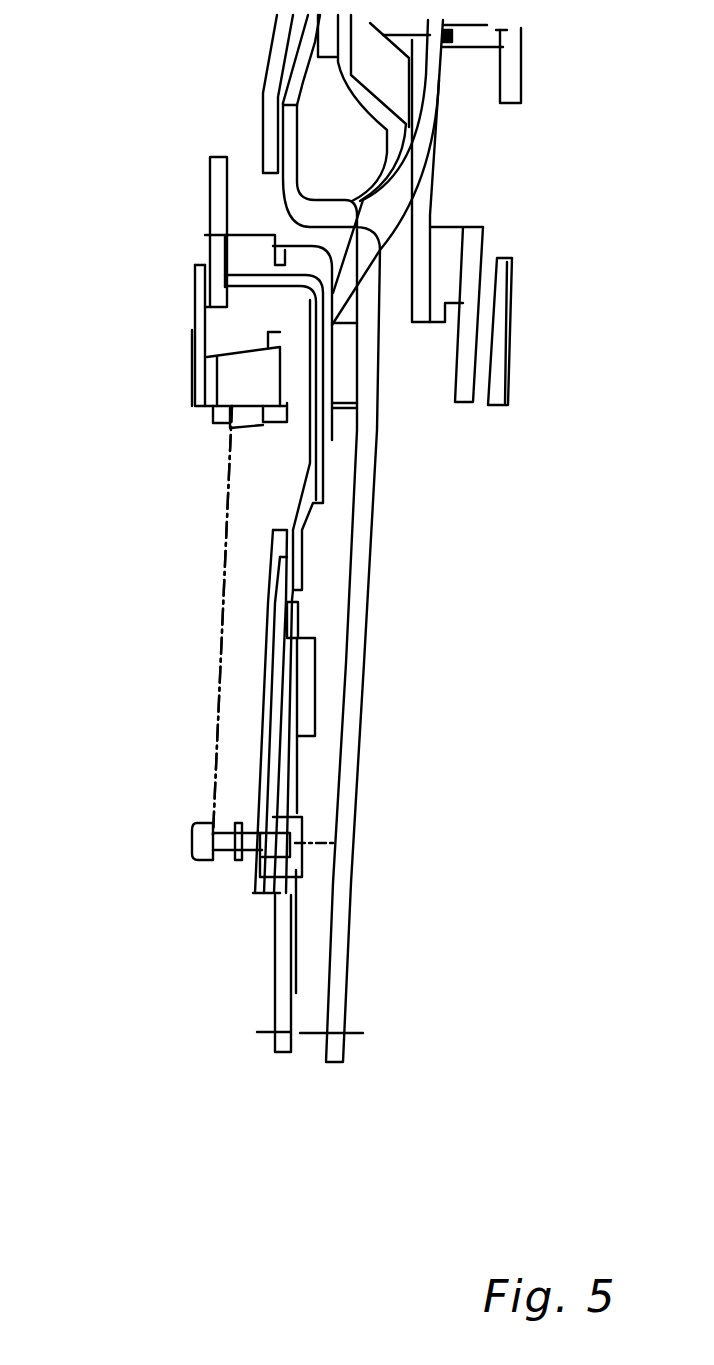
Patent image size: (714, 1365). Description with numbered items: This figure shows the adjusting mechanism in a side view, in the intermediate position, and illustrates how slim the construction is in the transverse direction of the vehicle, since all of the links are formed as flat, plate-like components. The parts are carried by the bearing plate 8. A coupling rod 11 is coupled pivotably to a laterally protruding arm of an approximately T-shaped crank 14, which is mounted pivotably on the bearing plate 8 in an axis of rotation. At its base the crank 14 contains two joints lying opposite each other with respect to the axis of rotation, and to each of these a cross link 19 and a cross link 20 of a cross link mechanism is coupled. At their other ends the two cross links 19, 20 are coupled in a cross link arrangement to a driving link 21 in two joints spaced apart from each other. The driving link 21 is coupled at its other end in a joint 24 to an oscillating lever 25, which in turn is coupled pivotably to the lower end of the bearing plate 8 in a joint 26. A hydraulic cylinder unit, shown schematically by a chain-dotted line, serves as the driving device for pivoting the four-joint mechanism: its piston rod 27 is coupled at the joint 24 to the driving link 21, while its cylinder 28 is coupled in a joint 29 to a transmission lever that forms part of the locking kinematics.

The bearing plate 8 is at (352, 800).
The coupling rod 11 is at (287, 563).
The crank 14 is at (280, 887).
The cross link 19 is at (315, 681).
The cross link 20 is at (265, 737).
The driving link 21 is at (277, 773).
The joint 24 is at (303, 865).
The oscillating lever 25 is at (292, 995).
The joint 26 is at (307, 1035).
The piston rod 27 is at (227, 605).
The cylinder 28 is at (222, 620).
The joint 29 is at (223, 412).